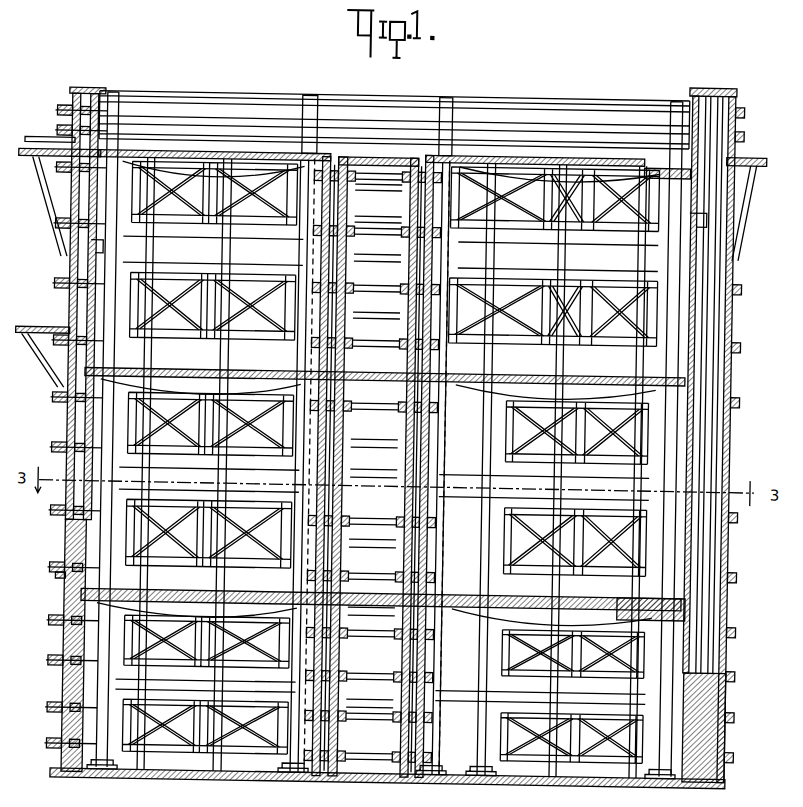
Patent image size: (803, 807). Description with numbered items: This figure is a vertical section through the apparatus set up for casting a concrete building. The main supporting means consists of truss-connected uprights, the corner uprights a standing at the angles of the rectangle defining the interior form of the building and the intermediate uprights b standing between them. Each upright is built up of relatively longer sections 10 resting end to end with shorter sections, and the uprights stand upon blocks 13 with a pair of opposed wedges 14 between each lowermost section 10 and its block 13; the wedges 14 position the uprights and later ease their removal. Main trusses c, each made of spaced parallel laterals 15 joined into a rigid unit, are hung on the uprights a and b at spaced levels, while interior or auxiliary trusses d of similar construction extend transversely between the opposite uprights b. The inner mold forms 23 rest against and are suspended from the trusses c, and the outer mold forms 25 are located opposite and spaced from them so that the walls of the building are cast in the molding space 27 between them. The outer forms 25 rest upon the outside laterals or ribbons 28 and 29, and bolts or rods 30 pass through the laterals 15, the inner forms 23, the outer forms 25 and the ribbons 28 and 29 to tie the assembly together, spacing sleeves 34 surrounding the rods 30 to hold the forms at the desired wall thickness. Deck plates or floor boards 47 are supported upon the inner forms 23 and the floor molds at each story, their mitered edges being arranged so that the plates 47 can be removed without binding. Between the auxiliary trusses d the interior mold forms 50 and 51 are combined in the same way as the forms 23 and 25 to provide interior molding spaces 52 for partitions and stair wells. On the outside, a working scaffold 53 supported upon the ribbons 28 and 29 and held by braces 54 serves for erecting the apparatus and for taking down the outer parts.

The corner uprights a is at (109, 107).
The intermediate uprights b is at (305, 104).
The main trusses c is at (250, 273).
The interior or auxiliary trusses d is at (316, 218).
The longer upright sections 10 is at (102, 687).
The blocks 13 is at (111, 774).
The wedges 14 is at (113, 765).
The laterals 15 is at (188, 224).
The inner mold forms 23 is at (93, 258).
The outer mold forms 25 is at (71, 646).
The molding space 27 is at (80, 429).
The outside lateral or ribbon 28 is at (60, 564).
The outside lateral or ribbon 29 is at (61, 578).
The bolts or rods 30 is at (59, 516).
The spacing sleeves 34 is at (70, 303).
The deck plates or floor boards 47 is at (373, 158).
The interior mold form 50 is at (421, 199).
The interior mold form 51 is at (408, 258).
The interior molding spaces 52 is at (415, 318).
The working scaffold 53 is at (23, 339).
The braces 54 is at (44, 373).